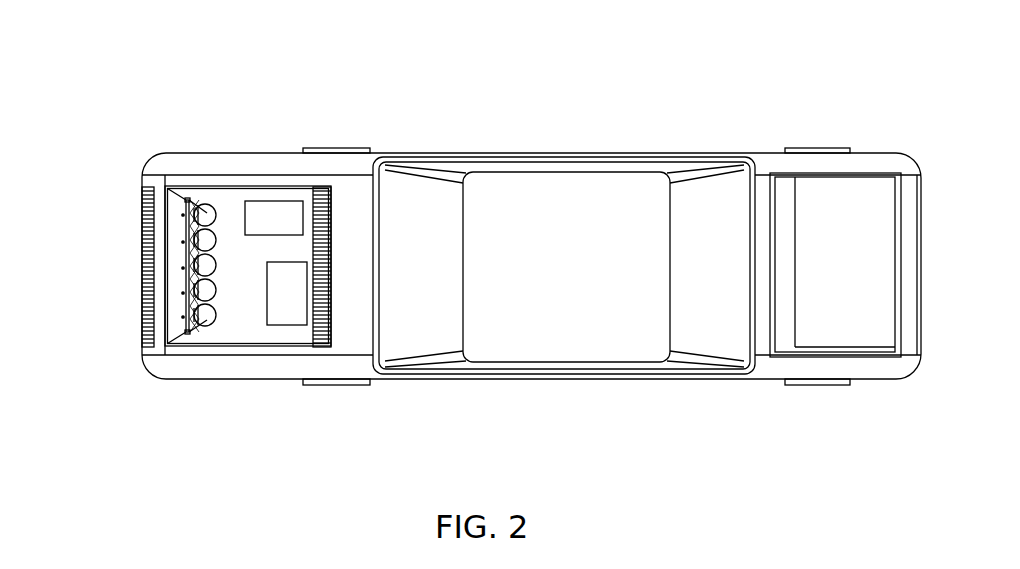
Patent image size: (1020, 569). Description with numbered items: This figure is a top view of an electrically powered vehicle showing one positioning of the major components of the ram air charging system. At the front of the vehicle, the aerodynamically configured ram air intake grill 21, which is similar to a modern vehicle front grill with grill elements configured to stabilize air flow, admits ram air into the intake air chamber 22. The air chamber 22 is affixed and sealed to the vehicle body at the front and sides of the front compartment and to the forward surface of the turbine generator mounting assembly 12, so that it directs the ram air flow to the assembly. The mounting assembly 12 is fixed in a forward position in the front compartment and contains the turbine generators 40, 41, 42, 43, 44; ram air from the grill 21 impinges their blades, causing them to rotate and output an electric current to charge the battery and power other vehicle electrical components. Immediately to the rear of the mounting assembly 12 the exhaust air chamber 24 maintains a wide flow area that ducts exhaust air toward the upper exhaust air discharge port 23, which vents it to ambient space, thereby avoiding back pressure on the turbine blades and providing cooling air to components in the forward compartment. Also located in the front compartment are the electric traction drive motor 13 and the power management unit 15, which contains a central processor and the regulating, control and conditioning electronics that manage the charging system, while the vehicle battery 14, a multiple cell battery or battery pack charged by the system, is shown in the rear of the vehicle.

The turbine generator mounting assembly 12 is at (260, 179).
The electric traction drive motor 13 is at (344, 125).
The vehicle battery 14 is at (814, 186).
The power management unit 15 is at (358, 374).
The front grill 21 is at (98, 238).
The intake air chamber 22 is at (199, 180).
The upper exhaust air discharge port 23 is at (426, 181).
The exhaust air chamber 24 is at (264, 338).
The turbine generator 40 is at (205, 215).
The turbine generator 41 is at (205, 240).
The turbine generator 42 is at (205, 265).
The turbine generator 43 is at (205, 290).
The turbine generator 44 is at (148, 395).